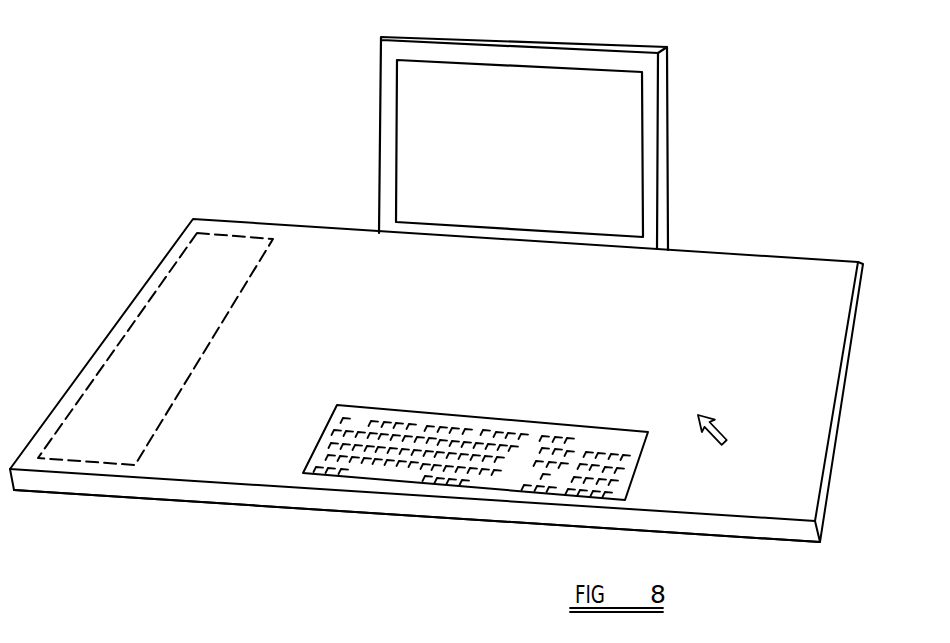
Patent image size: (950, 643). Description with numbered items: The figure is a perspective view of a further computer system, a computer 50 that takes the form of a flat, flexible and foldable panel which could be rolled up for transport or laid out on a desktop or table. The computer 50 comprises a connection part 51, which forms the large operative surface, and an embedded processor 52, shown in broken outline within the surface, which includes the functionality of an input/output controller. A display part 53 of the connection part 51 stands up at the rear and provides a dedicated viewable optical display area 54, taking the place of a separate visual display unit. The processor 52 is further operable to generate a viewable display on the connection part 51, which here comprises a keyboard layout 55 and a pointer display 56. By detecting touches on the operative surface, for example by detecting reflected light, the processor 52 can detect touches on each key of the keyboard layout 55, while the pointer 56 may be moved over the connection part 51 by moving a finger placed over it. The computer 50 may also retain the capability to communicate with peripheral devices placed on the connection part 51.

The computer 50 is at (860, 264).
The connection part 51 is at (267, 493).
The embedded processor 52 is at (82, 465).
The display part 53 is at (668, 172).
The viewable optical display area 54 is at (417, 138).
The keyboard layout 55 is at (430, 467).
The pointer display 56 is at (730, 433).